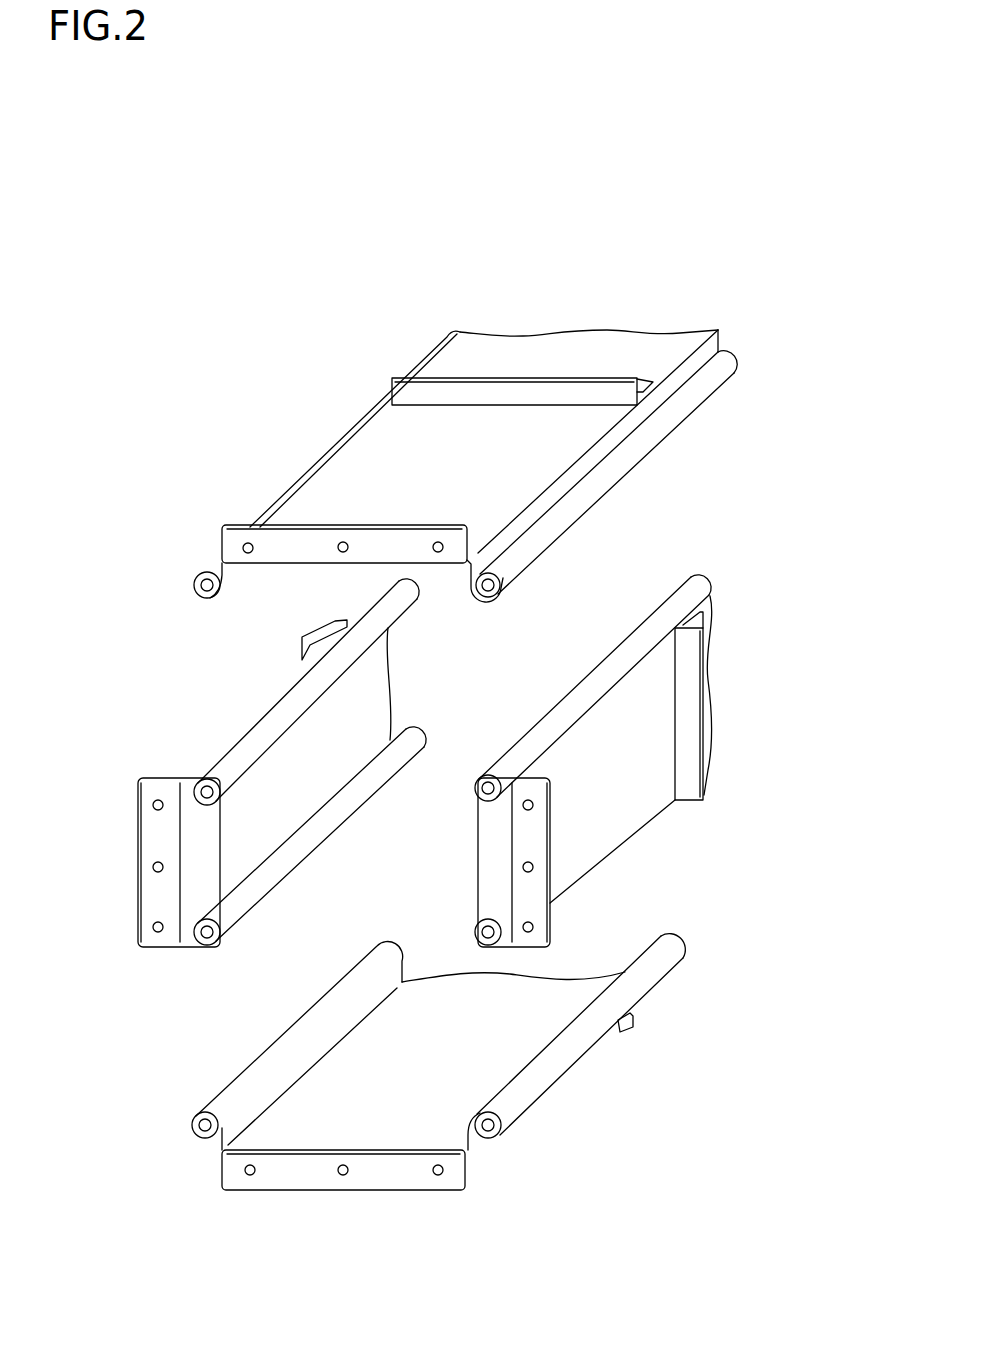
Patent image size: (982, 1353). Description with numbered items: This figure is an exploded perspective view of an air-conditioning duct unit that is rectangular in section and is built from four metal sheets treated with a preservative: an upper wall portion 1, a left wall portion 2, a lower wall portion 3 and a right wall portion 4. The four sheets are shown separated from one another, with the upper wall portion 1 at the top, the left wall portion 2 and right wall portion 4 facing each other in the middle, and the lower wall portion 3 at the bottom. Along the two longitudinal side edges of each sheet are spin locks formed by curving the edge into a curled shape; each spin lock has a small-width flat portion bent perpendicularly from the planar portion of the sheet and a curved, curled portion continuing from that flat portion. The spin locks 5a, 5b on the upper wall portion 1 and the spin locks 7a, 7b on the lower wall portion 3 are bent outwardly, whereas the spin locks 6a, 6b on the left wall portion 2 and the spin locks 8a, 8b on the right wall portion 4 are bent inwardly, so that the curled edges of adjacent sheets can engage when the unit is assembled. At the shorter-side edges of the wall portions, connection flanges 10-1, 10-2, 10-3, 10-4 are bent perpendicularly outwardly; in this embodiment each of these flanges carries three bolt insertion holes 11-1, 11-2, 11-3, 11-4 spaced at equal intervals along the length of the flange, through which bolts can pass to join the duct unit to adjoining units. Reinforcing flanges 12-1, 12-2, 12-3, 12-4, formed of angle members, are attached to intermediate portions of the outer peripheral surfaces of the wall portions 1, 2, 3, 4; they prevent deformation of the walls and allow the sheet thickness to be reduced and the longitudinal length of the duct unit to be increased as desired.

The upper wall portion 1 is at (363, 470).
The left wall portion 2 is at (213, 868).
The lower wall portion 3 is at (413, 1117).
The right wall portion 4 is at (610, 825).
The spin lock 5a is at (213, 567).
The spin lock 5b is at (517, 523).
The spin lock 6a is at (220, 763).
The spin lock 6b is at (257, 892).
The spin lock 7a is at (230, 1098).
The spin lock 7b is at (535, 1090).
The spin lock 8a is at (525, 743).
The spin lock 8b is at (500, 915).
The connection flange 10-1 is at (395, 540).
The connection flange 10-2 is at (155, 830).
The connection flange 10-3 is at (303, 1175).
The connection flange 10-4 is at (538, 890).
The bolt insertion holes 11-1 is at (343, 543).
The bolt insertion holes 11-2 is at (153, 867).
The bolt insertion holes 11-3 is at (343, 1178).
The bolt insertion holes 11-4 is at (533, 867).
The reinforcing flange 12-1 is at (502, 390).
The reinforcing flange 12-2 is at (307, 647).
The reinforcing flange 12-3 is at (623, 1027).
The reinforcing flange 12-4 is at (690, 775).